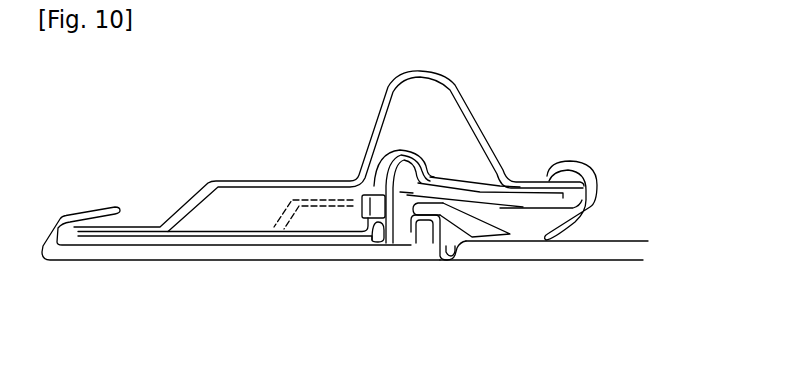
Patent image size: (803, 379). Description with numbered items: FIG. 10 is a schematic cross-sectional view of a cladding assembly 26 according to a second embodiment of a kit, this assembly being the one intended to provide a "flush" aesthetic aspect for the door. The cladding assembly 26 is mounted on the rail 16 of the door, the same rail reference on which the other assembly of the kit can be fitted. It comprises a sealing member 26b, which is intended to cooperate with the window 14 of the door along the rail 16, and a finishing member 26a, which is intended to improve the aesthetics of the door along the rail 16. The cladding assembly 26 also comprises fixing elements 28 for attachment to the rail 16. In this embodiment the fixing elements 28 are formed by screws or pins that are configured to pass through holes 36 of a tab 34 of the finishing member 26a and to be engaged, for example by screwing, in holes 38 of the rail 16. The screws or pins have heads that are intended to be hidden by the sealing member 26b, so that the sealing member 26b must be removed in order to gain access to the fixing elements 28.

The window 14 is at (597, 254).
The rail 16 is at (469, 91).
The cladding assembly 26 is at (380, 197).
The finishing member 26a is at (337, 264).
The sealing member 26b is at (607, 187).
The fixing elements 28 is at (355, 210).
The tab 34 is at (375, 243).
The holes 36 is at (384, 187).
The holes 38 is at (362, 194).